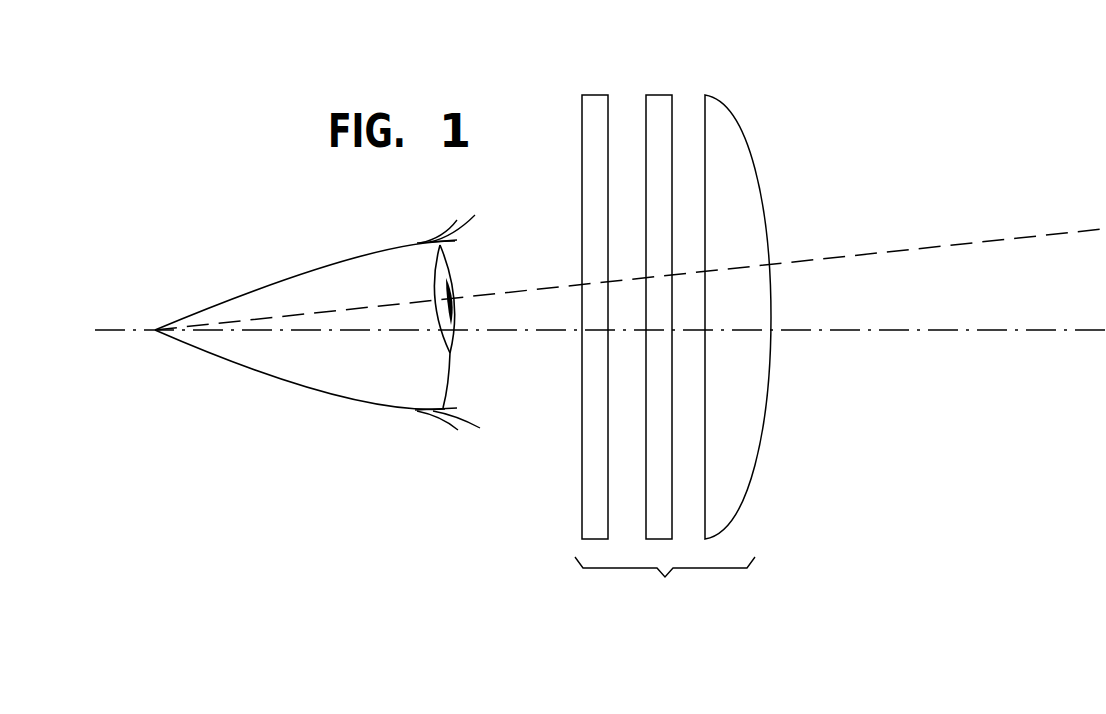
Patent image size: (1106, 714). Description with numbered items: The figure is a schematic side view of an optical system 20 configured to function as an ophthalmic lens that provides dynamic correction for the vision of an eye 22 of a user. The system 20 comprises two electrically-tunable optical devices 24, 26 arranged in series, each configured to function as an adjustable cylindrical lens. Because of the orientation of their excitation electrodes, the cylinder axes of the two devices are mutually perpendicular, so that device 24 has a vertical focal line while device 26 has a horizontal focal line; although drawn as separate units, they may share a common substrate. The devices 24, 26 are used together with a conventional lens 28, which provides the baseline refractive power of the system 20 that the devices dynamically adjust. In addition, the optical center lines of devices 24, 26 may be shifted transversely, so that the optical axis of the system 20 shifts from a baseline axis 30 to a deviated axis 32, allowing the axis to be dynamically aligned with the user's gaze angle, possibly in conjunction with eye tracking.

The optical system 20 is at (673, 320).
The eye 22 is at (305, 275).
The electrically-tunable optical device 24 is at (594, 95).
The electrically-tunable optical device 26 is at (657, 95).
The conventional lens 28 is at (708, 95).
The baseline axis 30 is at (903, 332).
The deviated axis 32 is at (942, 247).